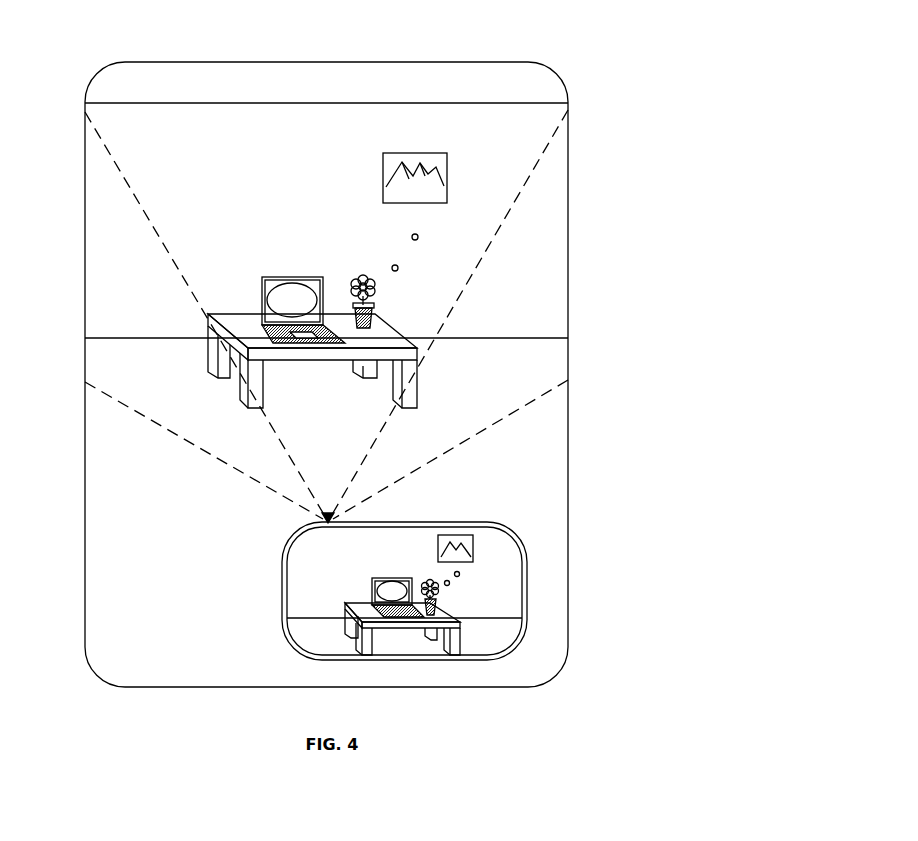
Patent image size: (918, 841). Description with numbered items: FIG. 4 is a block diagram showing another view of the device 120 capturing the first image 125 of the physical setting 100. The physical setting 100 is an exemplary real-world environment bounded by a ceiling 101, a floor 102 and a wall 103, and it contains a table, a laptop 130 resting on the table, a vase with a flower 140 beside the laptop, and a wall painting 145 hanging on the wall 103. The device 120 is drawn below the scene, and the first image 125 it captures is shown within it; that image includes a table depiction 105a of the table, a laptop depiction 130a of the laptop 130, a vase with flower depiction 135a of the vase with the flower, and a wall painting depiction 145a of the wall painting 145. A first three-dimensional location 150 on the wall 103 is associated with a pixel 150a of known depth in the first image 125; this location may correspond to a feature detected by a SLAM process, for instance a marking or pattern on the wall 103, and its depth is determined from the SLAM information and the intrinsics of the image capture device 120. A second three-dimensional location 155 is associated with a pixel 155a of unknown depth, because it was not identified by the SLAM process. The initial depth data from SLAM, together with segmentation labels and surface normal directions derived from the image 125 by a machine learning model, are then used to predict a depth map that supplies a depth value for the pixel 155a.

The physical setting 100 is at (219, 60).
The ceiling 101 is at (183, 94).
The floor 102 is at (177, 672).
The wall 103 is at (216, 177).
The table depiction 105a is at (348, 628).
The device 120 is at (282, 562).
The first image 125 is at (340, 562).
The laptop 130 is at (286, 277).
The laptop depiction 130a is at (372, 593).
The vase with flower depiction 135a is at (426, 582).
The plant 140 is at (372, 309).
The wall painting 145 is at (383, 178).
The wall painting depiction 145a is at (461, 535).
The first 3D location 150 is at (418, 237).
The pixel of known depth 150a is at (460, 573).
The second 3D location 155 is at (398, 268).
The pixel of unknown depth 155a is at (450, 585).